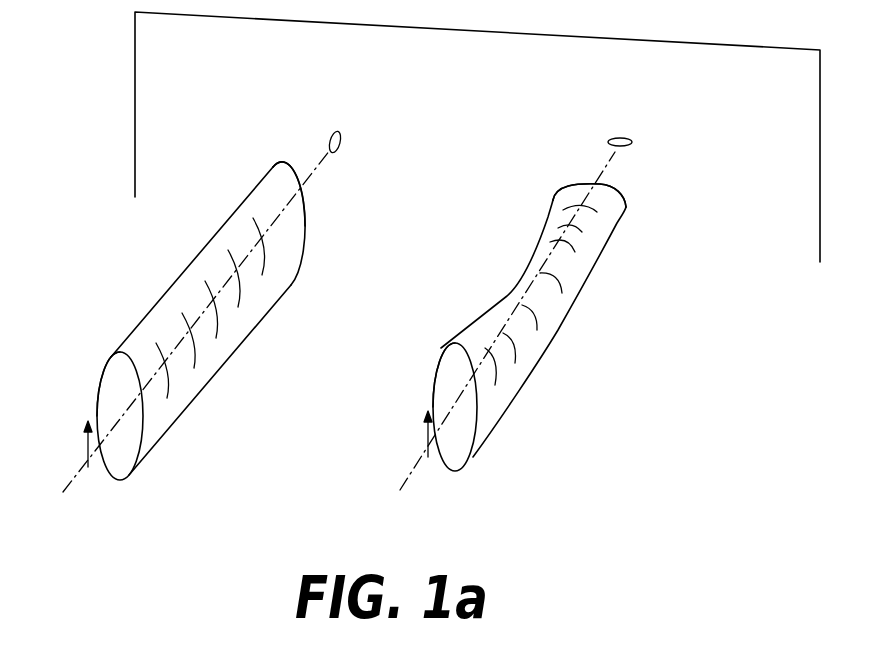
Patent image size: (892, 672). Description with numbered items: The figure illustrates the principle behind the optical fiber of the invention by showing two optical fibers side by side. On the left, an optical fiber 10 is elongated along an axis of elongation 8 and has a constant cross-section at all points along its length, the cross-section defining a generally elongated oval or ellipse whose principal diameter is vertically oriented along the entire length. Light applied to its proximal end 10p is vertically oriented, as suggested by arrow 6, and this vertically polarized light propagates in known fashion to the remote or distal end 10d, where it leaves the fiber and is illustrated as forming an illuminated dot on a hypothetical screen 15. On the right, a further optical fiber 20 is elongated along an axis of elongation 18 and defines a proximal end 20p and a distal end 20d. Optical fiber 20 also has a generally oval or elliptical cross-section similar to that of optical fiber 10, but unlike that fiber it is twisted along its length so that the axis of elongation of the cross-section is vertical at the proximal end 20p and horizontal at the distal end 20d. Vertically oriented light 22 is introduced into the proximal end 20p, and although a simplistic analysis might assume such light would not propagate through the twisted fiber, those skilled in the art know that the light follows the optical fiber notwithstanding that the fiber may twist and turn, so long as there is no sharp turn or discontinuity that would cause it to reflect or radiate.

The screen 15 is at (144, 65).
The optical fiber 10 is at (172, 283).
The distal end 10d is at (274, 166).
The proximal end 10p is at (97, 400).
The axis of elongation 8 is at (70, 485).
The arrow 6 is at (86, 440).
The optical fiber 20 is at (530, 261).
The distal end 20d is at (615, 192).
The proximal end 20p is at (437, 365).
The axis of elongation 18 is at (406, 488).
The vertically oriented light 22 is at (426, 432).